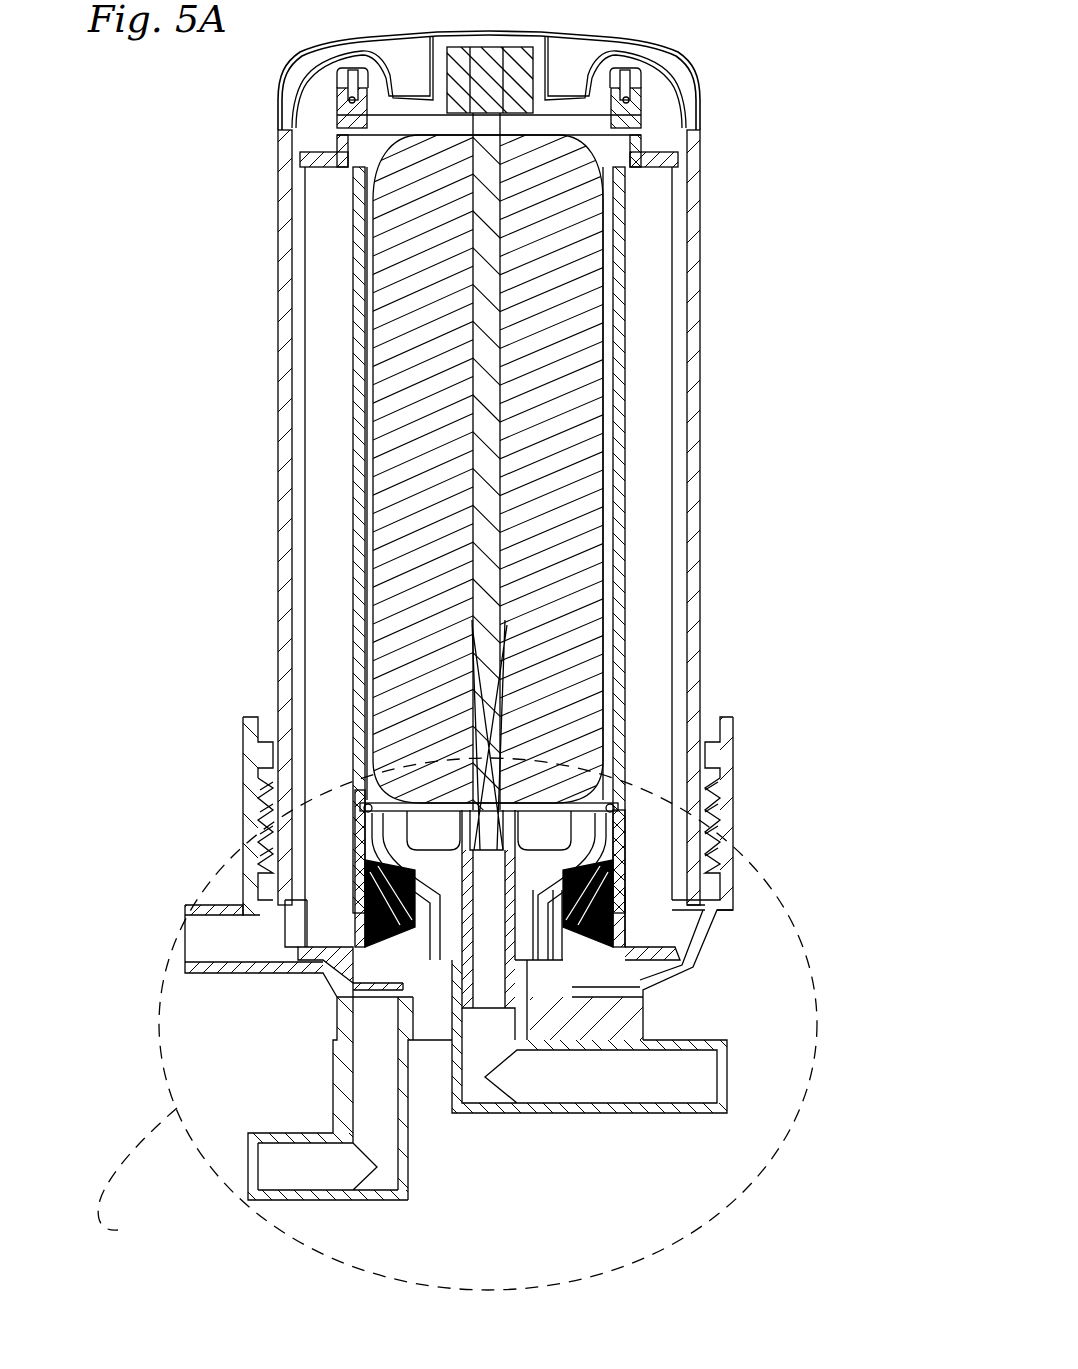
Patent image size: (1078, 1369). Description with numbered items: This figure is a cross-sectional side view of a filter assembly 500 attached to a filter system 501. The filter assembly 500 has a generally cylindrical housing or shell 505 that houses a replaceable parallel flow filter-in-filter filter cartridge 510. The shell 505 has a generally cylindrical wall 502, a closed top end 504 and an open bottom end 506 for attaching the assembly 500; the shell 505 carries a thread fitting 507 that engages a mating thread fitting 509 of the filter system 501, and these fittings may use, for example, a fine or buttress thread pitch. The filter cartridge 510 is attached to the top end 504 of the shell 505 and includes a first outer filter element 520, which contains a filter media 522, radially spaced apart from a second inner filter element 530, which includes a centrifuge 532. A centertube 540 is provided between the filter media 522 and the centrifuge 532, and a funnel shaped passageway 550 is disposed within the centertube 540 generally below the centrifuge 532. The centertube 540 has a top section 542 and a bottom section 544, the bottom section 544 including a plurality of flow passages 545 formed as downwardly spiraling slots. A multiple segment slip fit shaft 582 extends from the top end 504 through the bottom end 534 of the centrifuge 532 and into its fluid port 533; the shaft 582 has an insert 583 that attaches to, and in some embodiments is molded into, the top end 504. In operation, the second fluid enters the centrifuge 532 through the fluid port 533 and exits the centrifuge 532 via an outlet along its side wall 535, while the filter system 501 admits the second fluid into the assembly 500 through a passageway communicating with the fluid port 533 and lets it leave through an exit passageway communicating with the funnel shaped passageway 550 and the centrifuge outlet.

The filter assembly 500 is at (765, 88).
The filter system 501 is at (750, 1010).
The cylindrical wall 502 is at (700, 378).
The closed top end 504 is at (608, 42).
The housing or shell 505 is at (700, 225).
The open bottom end 506 is at (280, 912).
The thread fitting 507 is at (718, 812).
The thread fitting 509 is at (712, 830).
The filter cartridge 510 is at (303, 143).
The first outer filter element 520 is at (305, 286).
The filter media 522 is at (322, 333).
The second inner filter element 530 is at (630, 140).
The centrifuge 532 is at (565, 210).
The fluid port 533 is at (388, 884).
The bottom end of the centrifuge 534 is at (430, 800).
The side wall of the centrifuge 535 is at (605, 355).
The centertube 540 is at (353, 410).
The top section 542 is at (650, 290).
The bottom section 544 is at (345, 905).
The flow passages 545 is at (380, 945).
The funnel shaped passageway 550 is at (360, 858).
The multiple segment slip fit shaft 582 is at (470, 270).
The insert 583 is at (500, 58).